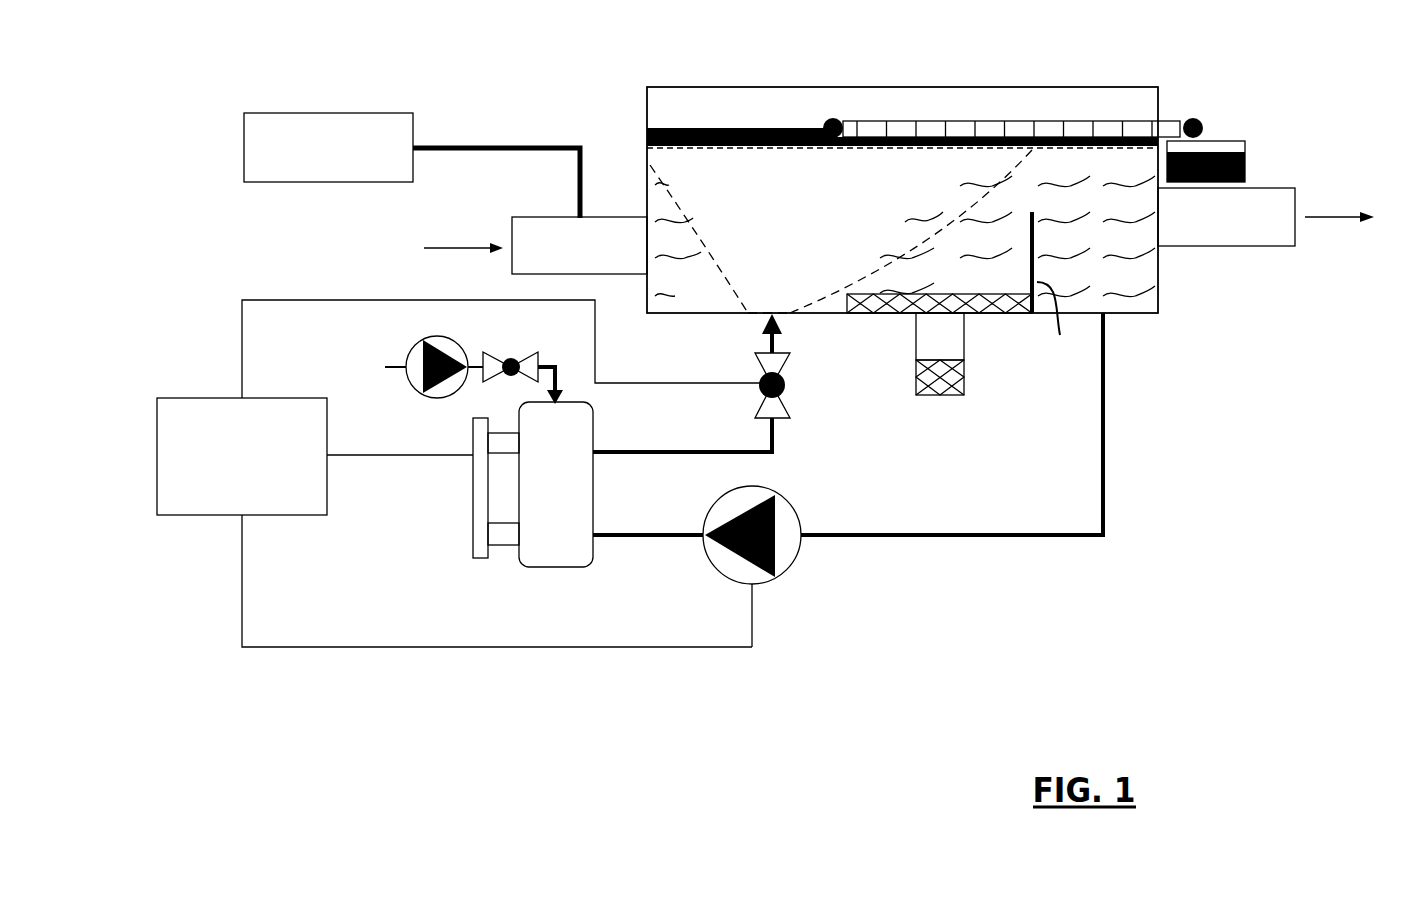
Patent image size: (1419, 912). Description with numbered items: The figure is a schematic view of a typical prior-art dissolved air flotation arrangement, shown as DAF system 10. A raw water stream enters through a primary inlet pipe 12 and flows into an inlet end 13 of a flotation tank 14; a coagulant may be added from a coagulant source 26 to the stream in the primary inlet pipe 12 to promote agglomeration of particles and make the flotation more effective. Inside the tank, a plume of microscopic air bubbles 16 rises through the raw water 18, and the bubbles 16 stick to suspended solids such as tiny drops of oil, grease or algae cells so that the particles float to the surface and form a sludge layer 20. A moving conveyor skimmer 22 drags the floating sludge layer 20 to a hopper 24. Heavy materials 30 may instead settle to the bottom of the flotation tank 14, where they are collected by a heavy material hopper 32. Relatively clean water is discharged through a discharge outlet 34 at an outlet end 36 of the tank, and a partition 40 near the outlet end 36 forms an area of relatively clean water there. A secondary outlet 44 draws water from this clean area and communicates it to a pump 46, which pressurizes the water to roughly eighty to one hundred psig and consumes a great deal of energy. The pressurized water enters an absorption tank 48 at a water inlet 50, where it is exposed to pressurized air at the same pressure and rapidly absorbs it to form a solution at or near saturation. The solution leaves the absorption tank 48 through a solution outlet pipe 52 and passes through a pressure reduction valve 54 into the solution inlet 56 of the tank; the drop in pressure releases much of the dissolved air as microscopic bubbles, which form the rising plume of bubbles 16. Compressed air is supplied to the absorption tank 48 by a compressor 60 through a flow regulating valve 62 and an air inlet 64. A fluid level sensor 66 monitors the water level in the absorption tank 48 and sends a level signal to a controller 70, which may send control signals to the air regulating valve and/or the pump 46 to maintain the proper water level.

The DAF system 10 is at (1000, 600).
The primary inlet pipe 12 is at (529, 222).
The inlet end 13 is at (681, 304).
The flotation tank 14 is at (647, 157).
The microscopic air bubbles 16 is at (803, 234).
The raw water 18 is at (968, 277).
The sludge layer 20 is at (738, 128).
The conveyor skimmer 22 is at (1021, 128).
The hopper 24 is at (1247, 162).
The coagulant source 26 is at (378, 112).
The heavy materials 30 is at (997, 305).
The heavy material hopper 32 is at (913, 350).
The discharge outlet 34 is at (1268, 246).
The outlet end 36 is at (1080, 282).
The partition 40 is at (1054, 322).
The secondary outlet 44 is at (1103, 428).
The pump 46 is at (795, 560).
The absorption tank 48 is at (576, 567).
The water inlet 50 is at (623, 535).
The solution outlet pipe 52 is at (627, 452).
The pressure reduction valve 54 is at (757, 366).
The solution inlet 56 is at (775, 340).
The compressor 60 is at (438, 340).
The flow regulating valve 62 is at (511, 358).
The air inlet 64 is at (555, 365).
The fluid level sensor 66 is at (473, 500).
The controller 70 is at (295, 515).